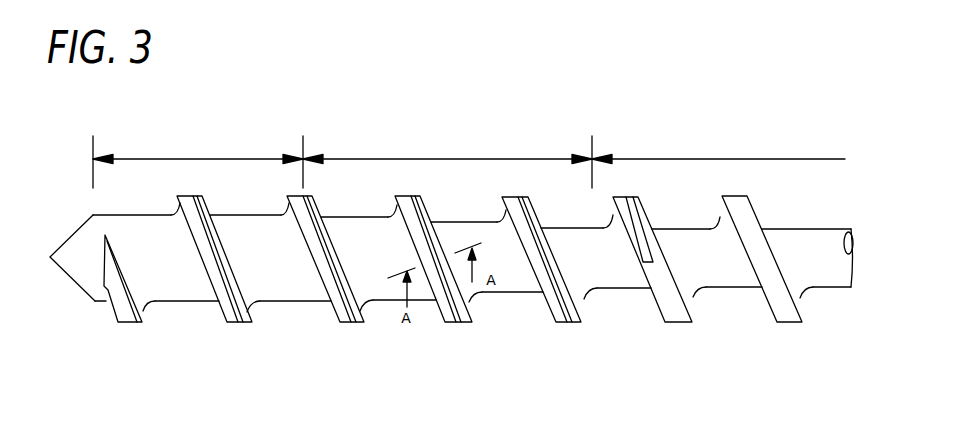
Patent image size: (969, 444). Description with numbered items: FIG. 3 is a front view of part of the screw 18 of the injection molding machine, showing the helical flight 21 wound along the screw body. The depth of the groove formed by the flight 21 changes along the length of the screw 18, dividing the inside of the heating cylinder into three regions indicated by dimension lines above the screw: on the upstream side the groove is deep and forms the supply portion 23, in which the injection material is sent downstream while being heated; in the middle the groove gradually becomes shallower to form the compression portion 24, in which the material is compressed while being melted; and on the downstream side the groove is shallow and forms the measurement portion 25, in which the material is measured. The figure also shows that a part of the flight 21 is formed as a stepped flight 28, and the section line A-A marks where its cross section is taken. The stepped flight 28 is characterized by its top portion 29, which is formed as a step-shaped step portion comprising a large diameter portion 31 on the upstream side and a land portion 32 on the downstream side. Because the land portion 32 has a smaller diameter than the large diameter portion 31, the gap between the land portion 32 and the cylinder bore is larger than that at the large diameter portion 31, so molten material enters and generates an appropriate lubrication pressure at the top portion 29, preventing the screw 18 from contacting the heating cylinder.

The screw 18 is at (691, 225).
The flight 21 is at (737, 197).
The supply portion 23 is at (718, 149).
The compression portion 24 is at (447, 160).
The measurement portion 25 is at (198, 160).
The stepped flight 28 is at (237, 325).
The top portion 29 is at (340, 325).
The large diameter portion 31 is at (463, 325).
The land portion 32 is at (439, 292).